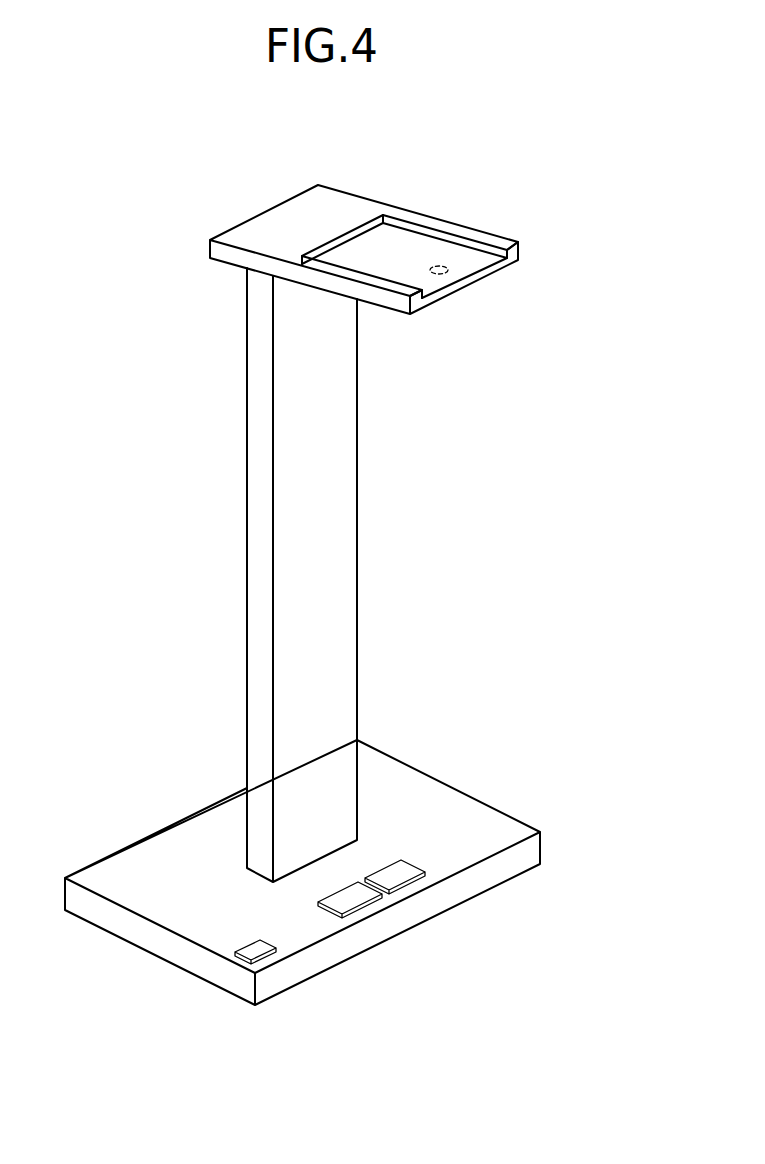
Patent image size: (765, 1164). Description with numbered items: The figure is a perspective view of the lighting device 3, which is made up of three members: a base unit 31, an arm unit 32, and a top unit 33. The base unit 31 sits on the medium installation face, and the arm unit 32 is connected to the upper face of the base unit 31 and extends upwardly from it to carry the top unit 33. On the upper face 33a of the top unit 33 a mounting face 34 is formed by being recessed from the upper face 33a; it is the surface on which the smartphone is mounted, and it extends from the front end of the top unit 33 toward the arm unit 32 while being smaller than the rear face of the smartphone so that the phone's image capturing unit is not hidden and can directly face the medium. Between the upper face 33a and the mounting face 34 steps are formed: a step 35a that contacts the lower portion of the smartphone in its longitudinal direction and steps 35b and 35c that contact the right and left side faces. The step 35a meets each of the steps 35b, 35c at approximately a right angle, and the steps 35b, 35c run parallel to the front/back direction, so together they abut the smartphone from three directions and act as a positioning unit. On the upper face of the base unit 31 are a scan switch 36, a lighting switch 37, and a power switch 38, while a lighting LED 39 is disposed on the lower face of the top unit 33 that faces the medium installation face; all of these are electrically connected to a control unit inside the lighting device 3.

The lighting device 3 is at (82, 153).
The base unit 31 is at (118, 866).
The arm unit 32 is at (257, 475).
The top unit 33 is at (375, 252).
The upper face of the top unit 33a is at (238, 235).
The mounting face 34 is at (468, 261).
The step 35a is at (368, 220).
The step 35b is at (430, 231).
The step 35c is at (392, 278).
The scan switch 36 is at (345, 897).
The lighting switch 37 is at (393, 876).
The power switch 38 is at (262, 945).
The lighting light emitting diode (LED) 39 is at (441, 264).